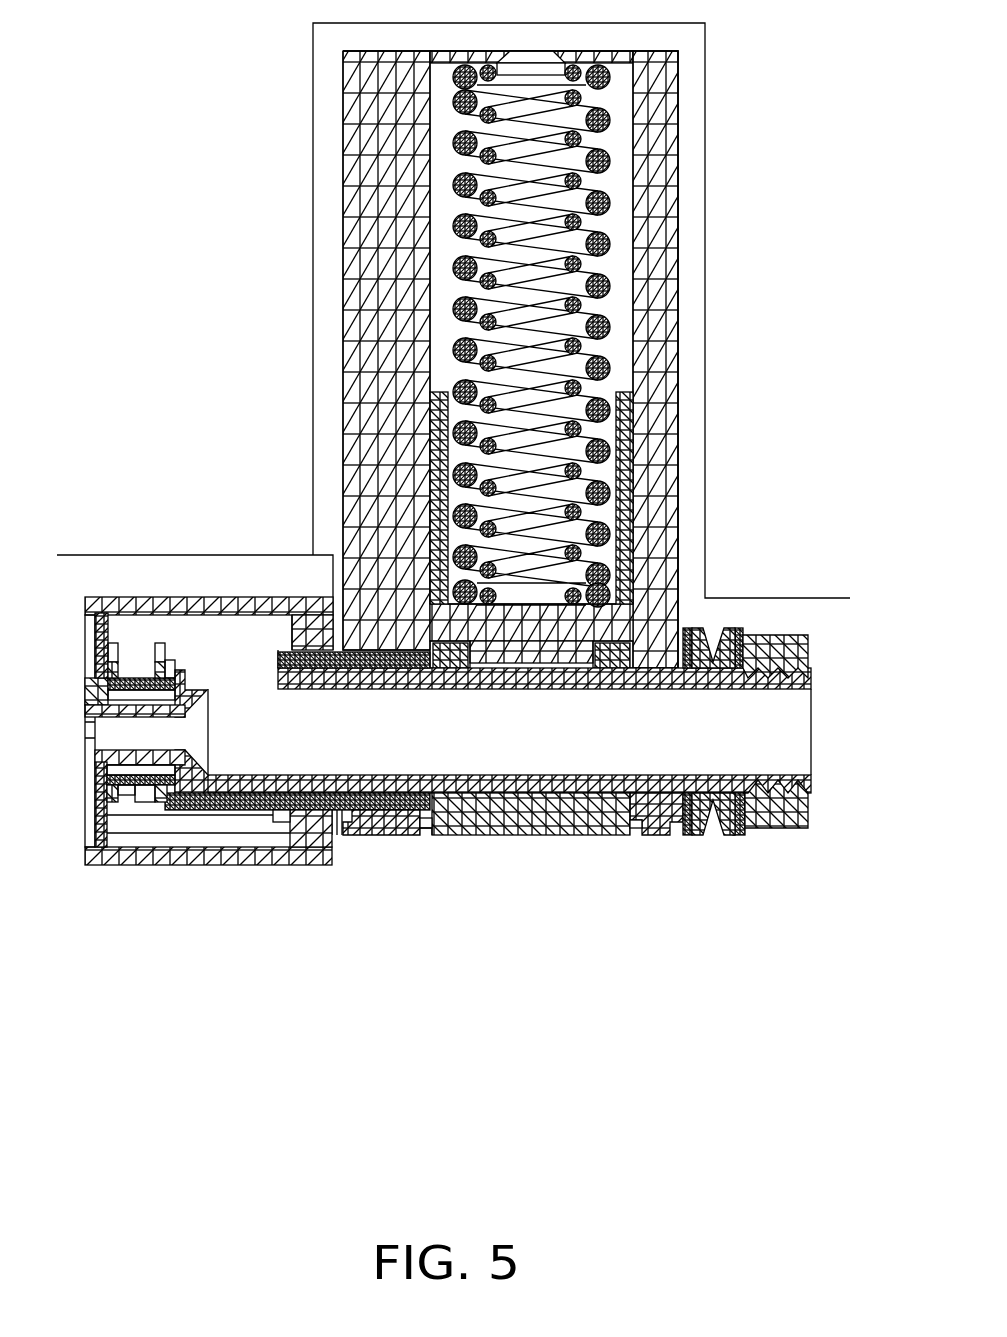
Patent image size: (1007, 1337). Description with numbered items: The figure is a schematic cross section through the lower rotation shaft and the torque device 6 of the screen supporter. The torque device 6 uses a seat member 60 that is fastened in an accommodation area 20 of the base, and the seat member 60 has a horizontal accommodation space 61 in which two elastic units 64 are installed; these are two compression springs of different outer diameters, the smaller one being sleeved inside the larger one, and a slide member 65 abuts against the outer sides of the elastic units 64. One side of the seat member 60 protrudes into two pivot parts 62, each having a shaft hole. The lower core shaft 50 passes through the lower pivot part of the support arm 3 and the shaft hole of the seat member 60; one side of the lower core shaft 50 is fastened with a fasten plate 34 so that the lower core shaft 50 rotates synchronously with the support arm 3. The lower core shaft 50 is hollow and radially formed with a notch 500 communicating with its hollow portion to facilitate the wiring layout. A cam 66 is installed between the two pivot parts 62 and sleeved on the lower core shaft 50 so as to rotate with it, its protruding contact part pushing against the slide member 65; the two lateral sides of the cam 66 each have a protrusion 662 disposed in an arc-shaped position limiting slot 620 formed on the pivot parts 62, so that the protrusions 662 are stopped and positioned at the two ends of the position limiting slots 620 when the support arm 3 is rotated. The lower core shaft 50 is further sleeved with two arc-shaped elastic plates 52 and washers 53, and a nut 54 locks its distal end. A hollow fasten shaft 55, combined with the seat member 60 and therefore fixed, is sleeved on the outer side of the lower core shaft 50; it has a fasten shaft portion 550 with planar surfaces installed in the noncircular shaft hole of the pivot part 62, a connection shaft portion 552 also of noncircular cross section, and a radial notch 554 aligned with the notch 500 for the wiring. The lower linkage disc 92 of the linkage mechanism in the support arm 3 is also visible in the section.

The support arm 3 is at (185, 608).
The torque device 6 is at (332, 274).
The accommodation area 20 is at (695, 255).
The fasten plate 34 is at (100, 657).
The lower core shaft 50 is at (475, 836).
The arc-shaped elastic plate 52 is at (703, 640).
The washer 53 is at (718, 832).
The nut 54 is at (795, 652).
The fasten shaft 55 is at (320, 812).
The seat member 60 is at (660, 313).
The accommodation space 61 is at (443, 122).
The pivot part 62 is at (385, 840).
The elastic unit 64 is at (586, 192).
The slide member 65 is at (620, 500).
The cam 66 is at (545, 836).
The lower linkage disc 92 is at (116, 802).
The notch 500 is at (243, 687).
The fasten shaft portion 550 is at (318, 652).
The connection shaft portion 552 is at (142, 678).
The radial notch 554 is at (260, 658).
The position limiting slot 620 is at (432, 838).
The protrusion 662 is at (430, 830).